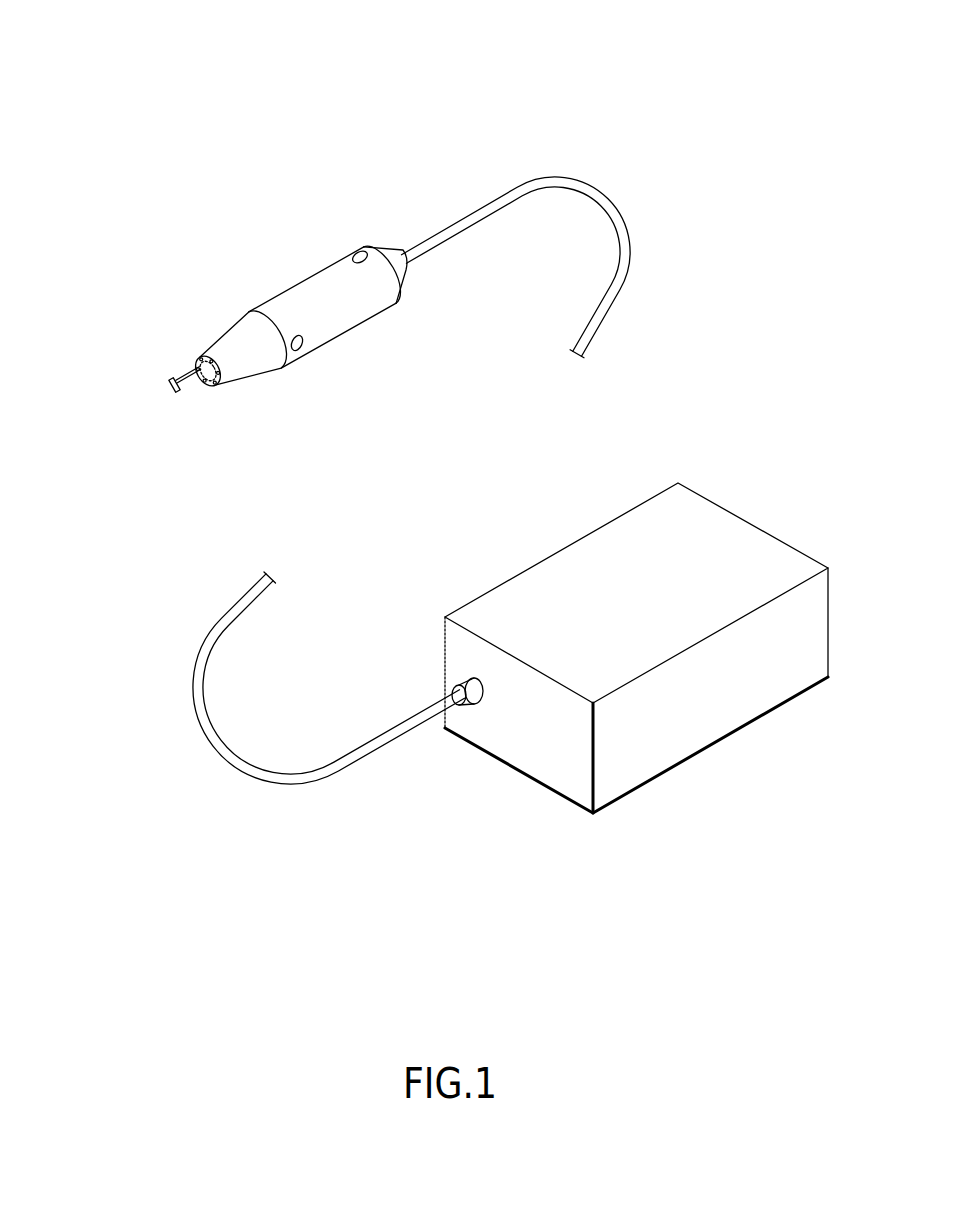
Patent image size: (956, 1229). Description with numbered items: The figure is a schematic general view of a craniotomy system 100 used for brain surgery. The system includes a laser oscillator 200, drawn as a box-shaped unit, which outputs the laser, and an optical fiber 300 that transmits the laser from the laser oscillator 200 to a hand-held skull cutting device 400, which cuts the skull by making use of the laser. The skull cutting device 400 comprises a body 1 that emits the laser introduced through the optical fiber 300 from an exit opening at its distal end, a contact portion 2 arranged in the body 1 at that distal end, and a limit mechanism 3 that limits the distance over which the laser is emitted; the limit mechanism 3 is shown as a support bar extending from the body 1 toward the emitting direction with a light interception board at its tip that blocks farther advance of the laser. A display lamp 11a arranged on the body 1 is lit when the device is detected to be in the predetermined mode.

The craniotomy system 100 is at (394, 146).
The body 1 is at (357, 323).
The skull cutting device 400 is at (273, 259).
The display lamp 11a is at (302, 326).
The contact portion 2 is at (209, 408).
The limit mechanism 3 is at (151, 377).
The optical fiber 300 is at (623, 283).
The laser oscillator 200 is at (563, 527).